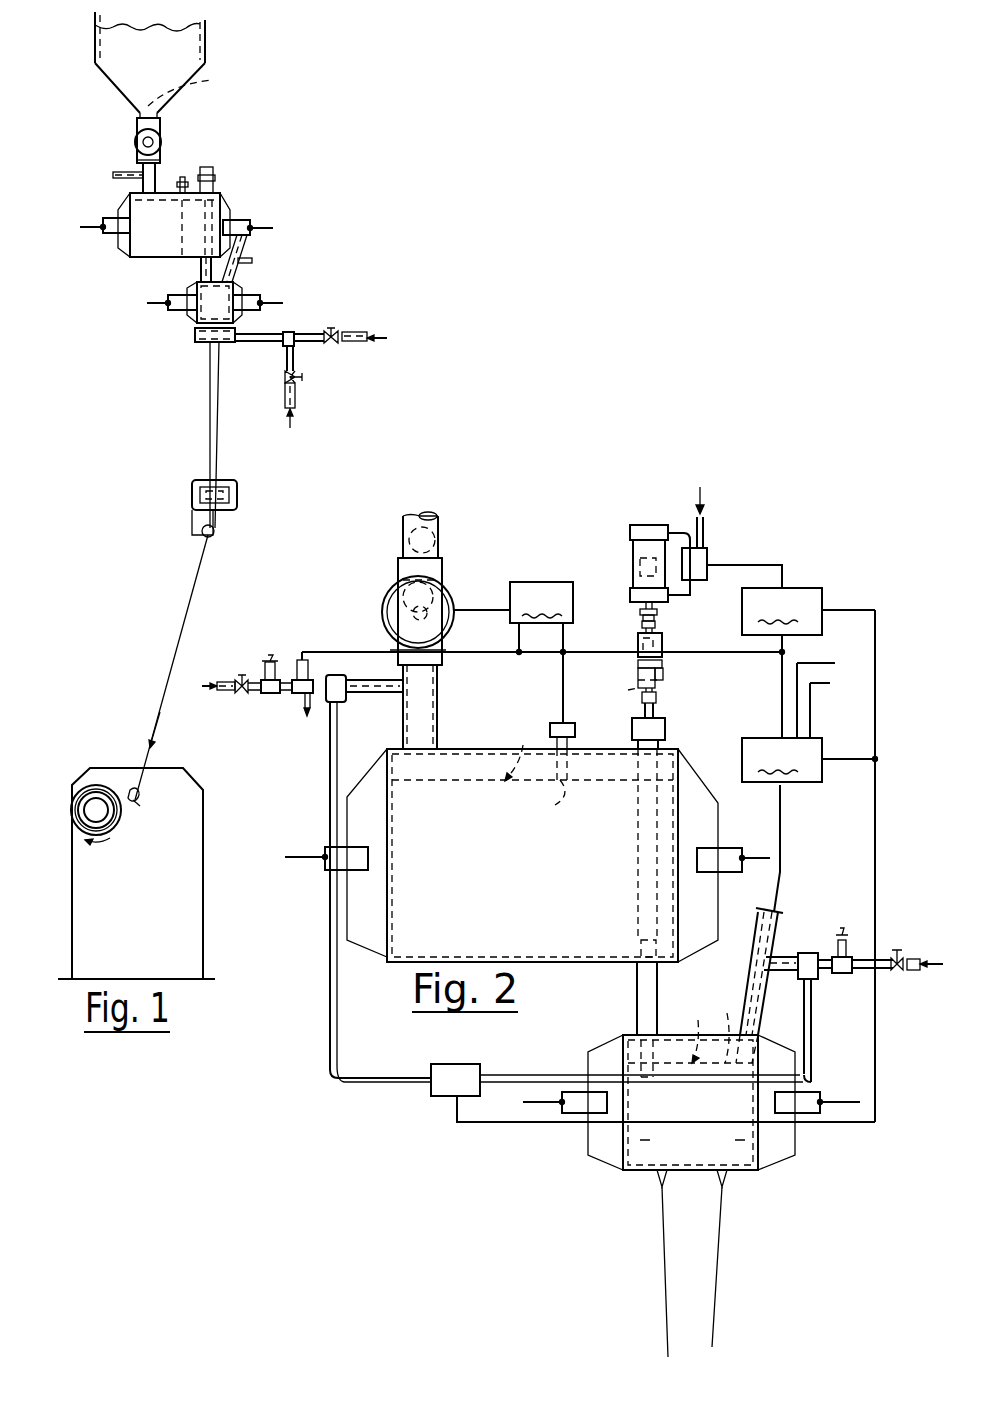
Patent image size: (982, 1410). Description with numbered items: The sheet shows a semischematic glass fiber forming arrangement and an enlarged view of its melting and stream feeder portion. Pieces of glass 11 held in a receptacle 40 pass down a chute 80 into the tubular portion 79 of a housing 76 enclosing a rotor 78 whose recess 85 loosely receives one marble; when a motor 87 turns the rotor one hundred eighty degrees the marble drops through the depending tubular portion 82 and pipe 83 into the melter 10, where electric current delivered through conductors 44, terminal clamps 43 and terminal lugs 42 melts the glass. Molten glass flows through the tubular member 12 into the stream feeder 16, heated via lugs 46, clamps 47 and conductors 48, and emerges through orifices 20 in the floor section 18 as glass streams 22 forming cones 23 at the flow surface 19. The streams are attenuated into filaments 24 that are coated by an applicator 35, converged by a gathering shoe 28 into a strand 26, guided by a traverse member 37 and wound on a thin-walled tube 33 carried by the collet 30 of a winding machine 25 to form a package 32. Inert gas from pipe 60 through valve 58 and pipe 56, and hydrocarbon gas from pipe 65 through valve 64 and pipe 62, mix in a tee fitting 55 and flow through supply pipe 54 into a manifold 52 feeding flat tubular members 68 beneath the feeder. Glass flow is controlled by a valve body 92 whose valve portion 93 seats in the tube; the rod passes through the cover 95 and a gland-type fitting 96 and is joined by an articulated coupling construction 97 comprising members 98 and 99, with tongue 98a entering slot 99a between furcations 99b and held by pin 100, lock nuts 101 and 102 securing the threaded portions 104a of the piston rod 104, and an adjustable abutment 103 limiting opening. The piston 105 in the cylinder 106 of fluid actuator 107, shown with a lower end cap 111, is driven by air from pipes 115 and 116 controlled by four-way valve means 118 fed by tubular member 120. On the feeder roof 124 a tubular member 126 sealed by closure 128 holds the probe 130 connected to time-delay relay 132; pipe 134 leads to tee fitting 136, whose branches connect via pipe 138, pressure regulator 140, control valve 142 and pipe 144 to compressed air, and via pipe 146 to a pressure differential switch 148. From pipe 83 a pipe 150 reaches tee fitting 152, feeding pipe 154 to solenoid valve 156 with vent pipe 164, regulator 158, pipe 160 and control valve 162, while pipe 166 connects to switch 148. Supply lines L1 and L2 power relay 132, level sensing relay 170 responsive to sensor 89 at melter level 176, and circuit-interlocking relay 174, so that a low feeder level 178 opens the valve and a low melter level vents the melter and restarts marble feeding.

In FIG. 1, the melter 10 is at (125, 257).
In FIG. 2, the melter 10 is at (400, 960).
In FIG. 1, the pieces of glass 11 is at (200, 76).
In FIG. 2, the pieces of glass 11 is at (408, 540).
In FIG. 1, the tubular member 12 is at (200, 268).
In FIG. 2, the tubular member 12 is at (637, 987).
In FIG. 1, the stream feeder 16 is at (195, 325).
In FIG. 2, the stream feeder 16 is at (622, 1140).
In FIG. 1, the floor section 18 is at (252, 261).
In FIG. 2, the floor section 18 is at (700, 1148).
In FIG. 2, the glass stream flow surface 19 is at (625, 1170).
In FIG. 2, the orifices 20 is at (735, 1168).
In FIG. 2, the glass streams 22 is at (660, 1190).
In FIG. 2, the cone 23 is at (660, 1180).
In FIG. 1, the filaments 24 is at (212, 400).
In FIG. 2, the filaments 24 is at (713, 1323).
In FIG. 1, the winding machine 25 is at (80, 770).
In FIG. 1, the strand 26 is at (195, 586).
In FIG. 1, the gathering shoe 28 is at (204, 536).
In FIG. 1, the collet 30 is at (80, 815).
In FIG. 1, the package 32 is at (78, 842).
In FIG. 1, the thin-walled tube 33 is at (105, 790).
In FIG. 1, the applicator 35 is at (205, 480).
In FIG. 1, the traverse member 37 is at (140, 806).
In FIG. 1, the receptacle 40 is at (205, 32).
In FIG. 1, the terminal lugs 42 is at (122, 205).
In FIG. 2, the terminal lugs 42 is at (357, 805).
In FIG. 1, the terminal clamps 43 is at (103, 222).
In FIG. 2, the terminal clamps 43 is at (325, 848).
In FIG. 1, the electric current supply conductors 44 is at (85, 232).
In FIG. 2, the electric current supply conductors 44 is at (305, 860).
In FIG. 1, the terminal lugs 46 is at (190, 318).
In FIG. 2, the terminal lugs 46 is at (600, 1052).
In FIG. 1, the terminal clamps 47 is at (168, 298).
In FIG. 2, the terminal clamps 47 is at (580, 1092).
In FIG. 1, the electric current supply conductors 48 is at (155, 306).
In FIG. 2, the electric current supply conductors 48 is at (523, 1102).
In FIG. 1, the manifold 52 is at (200, 340).
In FIG. 1, the supply pipe 54 is at (258, 341).
In FIG. 1, the tee fitting 55 is at (287, 332).
In FIG. 1, the pipe 56 is at (336, 330).
In FIG. 1, the adjustable valve 58 is at (346, 341).
In FIG. 1, the pipe 60 is at (368, 333).
In FIG. 1, the pipe 62 is at (294, 355).
In FIG. 1, the adjustable valve 64 is at (285, 376).
In FIG. 1, the pipe 65 is at (285, 398).
In FIG. 1, the tubular members 68 is at (218, 344).
In FIG. 1, the housing 76 is at (135, 140).
In FIG. 2, the housing 76 is at (450, 607).
In FIG. 2, the rotor 78 is at (410, 613).
In FIG. 1, the tubular portion 79 is at (140, 112).
In FIG. 2, the tubular portion 79 is at (403, 582).
In FIG. 2, the chute 80 is at (405, 515).
In FIG. 1, the depending tubular portion 82 is at (140, 160).
In FIG. 2, the depending tubular portion 82 is at (442, 660).
In FIG. 2, the pipe 83 is at (437, 705).
In FIG. 2, the recess 85 is at (392, 600).
In FIG. 2, the motor 87 is at (392, 642).
In FIG. 2, the sensor 89 is at (555, 805).
In FIG. 2, the valve body 92 is at (638, 860).
In FIG. 2, the valve portion 93 is at (640, 945).
In FIG. 2, the cover 95 is at (467, 722).
In FIG. 2, the gland-type fitting 96 is at (632, 730).
In FIG. 2, the articulated coupling construction 97 is at (666, 681).
In FIG. 2, the coupling member 98 is at (662, 645).
In FIG. 2, the tongue 98a is at (640, 645).
In FIG. 2, the coupling member 99 is at (655, 685).
In FIG. 2, the slot 99a is at (563, 667).
In FIG. 2, the furcations 99b is at (638, 664).
In FIG. 2, the pin 100 is at (665, 677).
In FIG. 2, the lock nut 101 is at (642, 698).
In FIG. 2, the lock nut 102 is at (656, 624).
In FIG. 2, the adjustable abutment 103 is at (655, 615).
In FIG. 2, the piston rod 104 is at (640, 612).
In FIG. 2, the threaded portion 104a is at (656, 632).
In FIG. 2, the piston 105 is at (640, 565).
In FIG. 2, the cylinder 106 is at (619, 561).
In FIG. 2, the fluid actuator 107 is at (634, 525).
In FIG. 2, the cylinder end cap 111 is at (630, 595).
In FIG. 2, the pipe 115 is at (690, 530).
In FIG. 2, the pipe 116 is at (690, 592).
In FIG. 2, the four-way solenoid-actuated valve means 118 is at (708, 553).
In FIG. 2, the tubular member 120 is at (705, 530).
In FIG. 2, the roof 124 is at (641, 1040).
In FIG. 1, the tubular member 126 is at (246, 240).
In FIG. 2, the tubular member 126 is at (766, 975).
In FIG. 2, the closure 128 is at (781, 880).
In FIG. 2, the probe 130 is at (727, 1013).
In FIG. 2, the time-delay relay 132 is at (810, 866).
In FIG. 2, the pipe 134 is at (778, 915).
In FIG. 2, the tee-shaped fitting 136 is at (828, 930).
In FIG. 2, the pipe 138 is at (811, 982).
In FIG. 2, the pressure regulator 140 is at (855, 935).
In FIG. 2, the adjustable control valve means 142 is at (915, 972).
In FIG. 2, the pipe 144 is at (903, 930).
In FIG. 2, the pipe 146 is at (811, 1040).
In FIG. 2, the pressure differential switch 148 is at (432, 1093).
In FIG. 1, the pipe 150 is at (113, 174).
In FIG. 2, the pipe 150 is at (352, 695).
In FIG. 2, the tee-shaped fitting 152 is at (330, 703).
In FIG. 2, the pipe 154 is at (312, 694).
In FIG. 2, the solenoid-operated valve means 156 is at (298, 662).
In FIG. 2, the pressure regulator 158 is at (266, 664).
In FIG. 2, the pipe 160 is at (230, 694).
In FIG. 2, the adjustable control valve 162 is at (244, 698).
In FIG. 2, the vent pipe 164 is at (280, 694).
In FIG. 2, the pipe 166 is at (330, 955).
In FIG. 2, the level sensing relay 170 is at (513, 618).
In FIG. 2, the circuit-interlocking relay 174 is at (588, 651).
In FIG. 2, the glass level 176 is at (522, 742).
In FIG. 2, the glass level 178 is at (698, 1035).
In FIG. 2, the current supply line L1 is at (828, 693).
In FIG. 2, the current supply line L2 is at (832, 706).